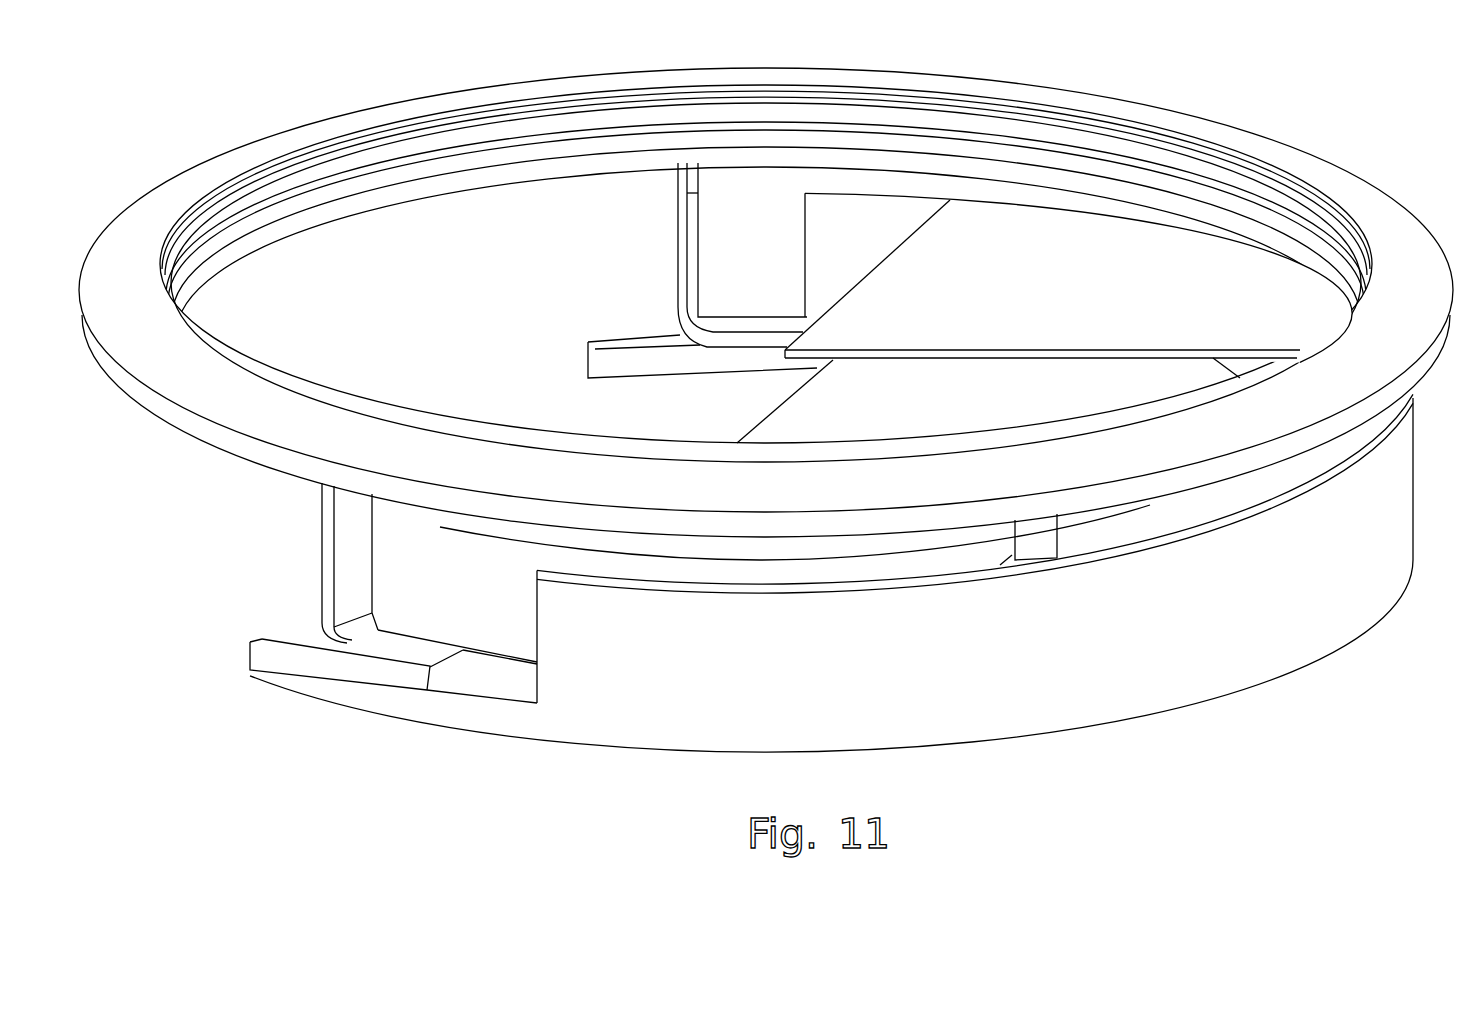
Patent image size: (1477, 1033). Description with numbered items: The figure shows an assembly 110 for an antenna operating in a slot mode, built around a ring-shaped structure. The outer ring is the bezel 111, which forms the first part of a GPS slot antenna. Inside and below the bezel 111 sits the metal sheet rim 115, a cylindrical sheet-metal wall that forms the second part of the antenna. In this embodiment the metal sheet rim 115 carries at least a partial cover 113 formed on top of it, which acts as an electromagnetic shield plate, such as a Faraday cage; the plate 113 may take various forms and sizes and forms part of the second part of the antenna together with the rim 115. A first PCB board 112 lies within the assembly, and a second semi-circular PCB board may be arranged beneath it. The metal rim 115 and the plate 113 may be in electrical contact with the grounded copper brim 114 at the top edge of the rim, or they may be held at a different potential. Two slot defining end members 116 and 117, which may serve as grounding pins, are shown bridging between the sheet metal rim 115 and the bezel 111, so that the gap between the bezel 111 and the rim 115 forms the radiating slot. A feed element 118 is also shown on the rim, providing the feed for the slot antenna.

The ring body 110 is at (257, 128).
The bezel 111 is at (310, 433).
The first PCB board 112 is at (878, 421).
The partial cover 113 is at (1048, 297).
The grounded copper brim 114 is at (623, 572).
The metal sheet rim 115 is at (628, 713).
The slot defining end member 116 is at (322, 578).
The slot defining end member 117 is at (680, 253).
The feed element 118 is at (1027, 543).